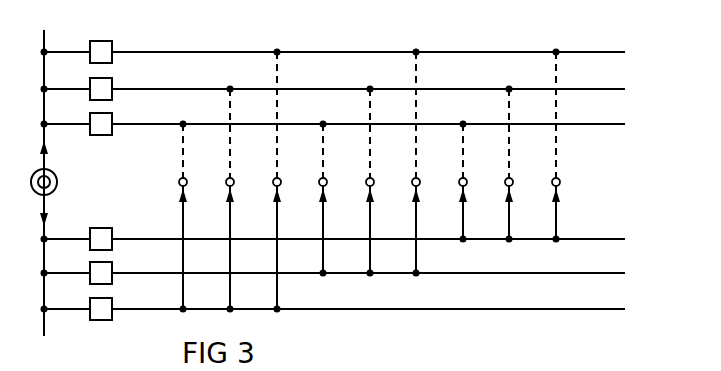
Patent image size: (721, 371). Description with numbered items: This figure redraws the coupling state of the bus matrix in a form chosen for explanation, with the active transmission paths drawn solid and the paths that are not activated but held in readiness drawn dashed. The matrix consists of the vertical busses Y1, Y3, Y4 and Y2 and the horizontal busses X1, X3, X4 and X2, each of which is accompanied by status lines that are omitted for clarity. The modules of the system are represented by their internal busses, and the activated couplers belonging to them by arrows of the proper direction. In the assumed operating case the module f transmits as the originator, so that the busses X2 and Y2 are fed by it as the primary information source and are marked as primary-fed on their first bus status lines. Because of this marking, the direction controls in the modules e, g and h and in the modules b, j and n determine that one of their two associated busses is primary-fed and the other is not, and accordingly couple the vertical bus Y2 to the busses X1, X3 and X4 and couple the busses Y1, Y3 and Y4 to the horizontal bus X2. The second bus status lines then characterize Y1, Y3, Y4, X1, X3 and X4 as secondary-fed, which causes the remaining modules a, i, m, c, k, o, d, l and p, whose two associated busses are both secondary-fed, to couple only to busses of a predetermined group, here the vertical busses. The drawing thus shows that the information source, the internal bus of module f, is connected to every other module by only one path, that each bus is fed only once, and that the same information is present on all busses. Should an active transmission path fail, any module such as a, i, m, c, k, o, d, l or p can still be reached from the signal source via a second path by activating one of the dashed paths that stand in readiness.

The internal bus of module a is at (190, 217).
The internal bus of module i is at (234, 199).
The internal bus of module m is at (288, 181).
The internal bus of module c is at (330, 199).
The internal bus of module k is at (377, 181).
The internal bus of module o is at (423, 163).
The internal bus of module d is at (470, 182).
The internal bus of module l is at (513, 164).
The internal bus of module p is at (563, 146).
The module n is at (112, 45).
The module j is at (112, 82).
The module b is at (112, 117).
The module h is at (112, 232).
The module g is at (112, 266).
The module e is at (112, 302).
The originating module f is at (58, 182).
The horizontal bus X4 is at (350, 53).
The horizontal bus X3 is at (350, 89).
The horizontal bus X1 is at (350, 124).
The vertical bus Y4 is at (349, 240).
The vertical bus Y3 is at (349, 273).
The vertical bus Y1 is at (349, 309).
The vertical bus Y2 is at (45, 172).
The horizontal bus X2 is at (46, 332).